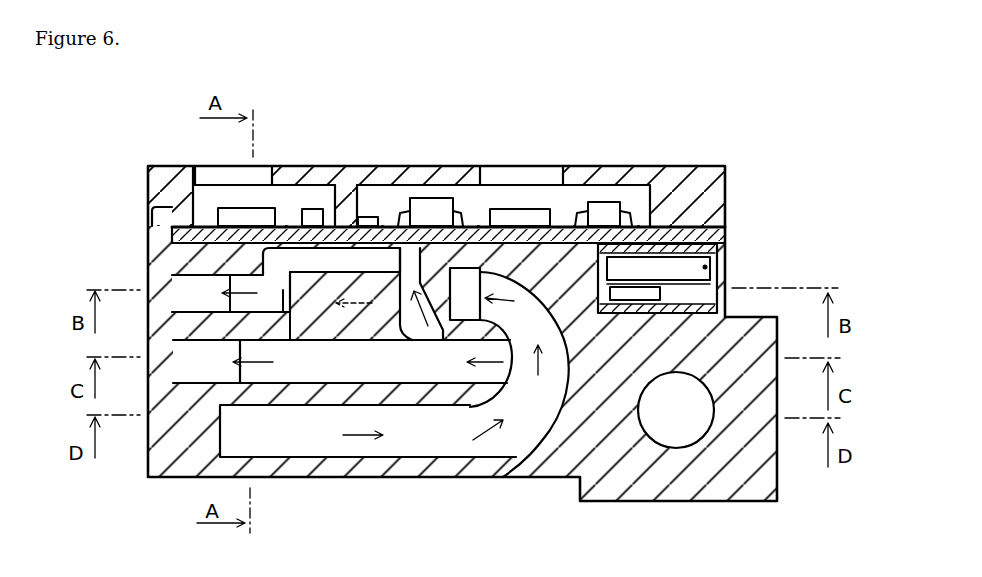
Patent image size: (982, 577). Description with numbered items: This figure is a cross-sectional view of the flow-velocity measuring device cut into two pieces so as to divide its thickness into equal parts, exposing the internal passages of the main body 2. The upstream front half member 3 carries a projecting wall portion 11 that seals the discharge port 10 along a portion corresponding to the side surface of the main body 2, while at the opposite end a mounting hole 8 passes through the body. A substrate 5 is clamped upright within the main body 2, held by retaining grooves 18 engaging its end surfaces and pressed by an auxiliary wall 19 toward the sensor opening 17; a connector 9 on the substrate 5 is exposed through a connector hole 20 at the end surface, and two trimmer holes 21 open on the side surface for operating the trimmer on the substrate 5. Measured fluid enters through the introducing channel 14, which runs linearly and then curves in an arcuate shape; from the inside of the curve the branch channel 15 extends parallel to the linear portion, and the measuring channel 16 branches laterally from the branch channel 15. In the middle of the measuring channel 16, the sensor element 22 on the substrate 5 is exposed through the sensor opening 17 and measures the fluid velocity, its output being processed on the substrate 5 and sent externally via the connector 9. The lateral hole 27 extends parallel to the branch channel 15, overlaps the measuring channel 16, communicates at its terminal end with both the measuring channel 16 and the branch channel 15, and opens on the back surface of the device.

The main body 2 is at (126, 170).
The front half member 3 is at (440, 167).
The substrate 5 is at (577, 215).
The mounting hole 8 is at (688, 448).
The connector 9 is at (708, 267).
The discharge port 10 is at (274, 490).
The projecting wall portion 11 is at (149, 300).
The introducing channel 14 is at (520, 401).
The branch channel 15 is at (462, 365).
The measuring channel 16 is at (392, 318).
The sensor opening 17 is at (318, 209).
The retaining grooves 18 is at (150, 205).
The auxiliary wall 19 is at (338, 201).
The connector hole 20 is at (725, 232).
The trimmer holes 21 is at (195, 166).
The sensor element 22 is at (372, 217).
The lateral hole 27 is at (322, 480).